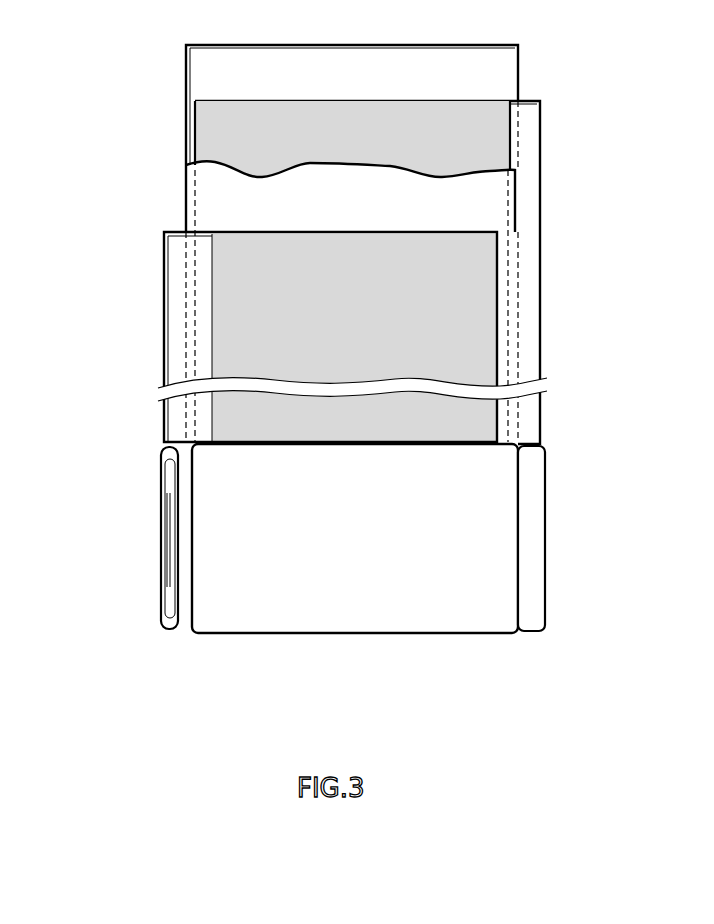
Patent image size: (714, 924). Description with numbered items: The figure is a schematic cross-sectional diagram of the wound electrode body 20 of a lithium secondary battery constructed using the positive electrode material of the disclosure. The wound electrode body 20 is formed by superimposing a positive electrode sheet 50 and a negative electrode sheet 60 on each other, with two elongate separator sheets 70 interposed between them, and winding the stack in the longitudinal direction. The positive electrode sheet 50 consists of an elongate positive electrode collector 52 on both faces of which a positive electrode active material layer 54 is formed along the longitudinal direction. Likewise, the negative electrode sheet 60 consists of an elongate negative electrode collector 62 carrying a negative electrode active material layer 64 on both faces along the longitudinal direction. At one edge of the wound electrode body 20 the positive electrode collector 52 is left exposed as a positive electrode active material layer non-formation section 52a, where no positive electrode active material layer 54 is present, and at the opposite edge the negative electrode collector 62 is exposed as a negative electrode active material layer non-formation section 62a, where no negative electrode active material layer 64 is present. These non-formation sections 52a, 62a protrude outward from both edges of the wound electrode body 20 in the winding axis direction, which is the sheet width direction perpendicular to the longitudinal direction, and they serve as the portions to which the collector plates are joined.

The wound electrode body 20 is at (413, 612).
The positive electrode sheet 50 is at (280, 337).
The positive electrode collector 52 is at (163, 369).
The positive electrode active material layer non-formation section 52a is at (180, 340).
The positive electrode active material layer 54 is at (223, 252).
The negative electrode sheet 60 is at (417, 270).
The negative electrode collector 62 is at (540, 280).
The negative electrode active material layer non-formation section 62a is at (528, 249).
The negative electrode active material layer 64 is at (503, 128).
The separator sheet 70 is at (207, 65).